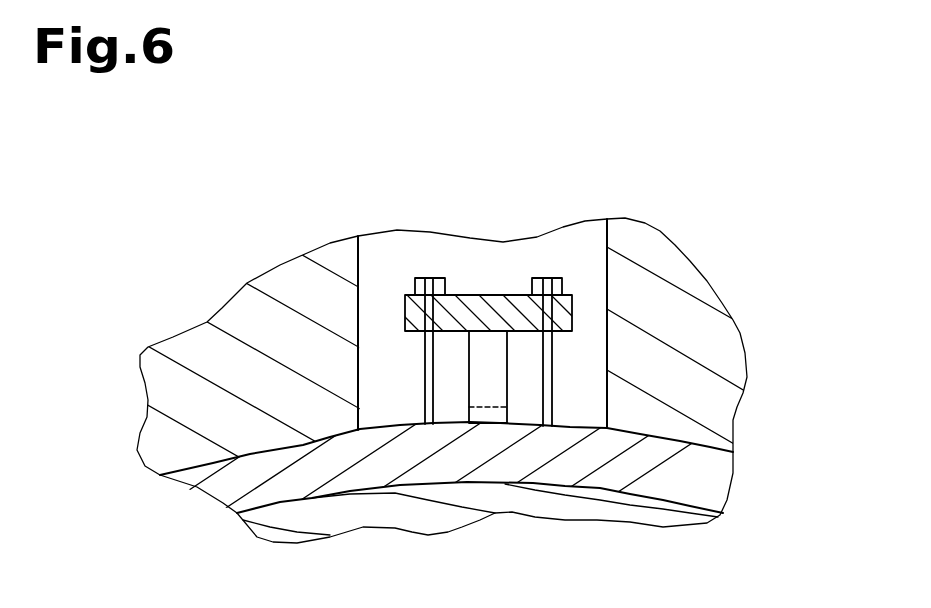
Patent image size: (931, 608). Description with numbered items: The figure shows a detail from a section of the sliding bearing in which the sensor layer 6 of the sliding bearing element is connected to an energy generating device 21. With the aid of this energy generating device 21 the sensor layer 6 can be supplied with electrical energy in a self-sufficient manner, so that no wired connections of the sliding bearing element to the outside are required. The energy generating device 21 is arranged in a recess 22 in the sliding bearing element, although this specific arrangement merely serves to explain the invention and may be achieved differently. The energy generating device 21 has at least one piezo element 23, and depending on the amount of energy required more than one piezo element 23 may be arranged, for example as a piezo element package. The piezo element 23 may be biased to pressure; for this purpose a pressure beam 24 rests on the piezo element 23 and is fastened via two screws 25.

The sensor layer 6 is at (700, 505).
The energy generating device 21 is at (583, 303).
The recess 22 is at (557, 242).
The piezo element 23 is at (513, 365).
The pressure beam 24 is at (597, 315).
The screws 25 is at (423, 267).